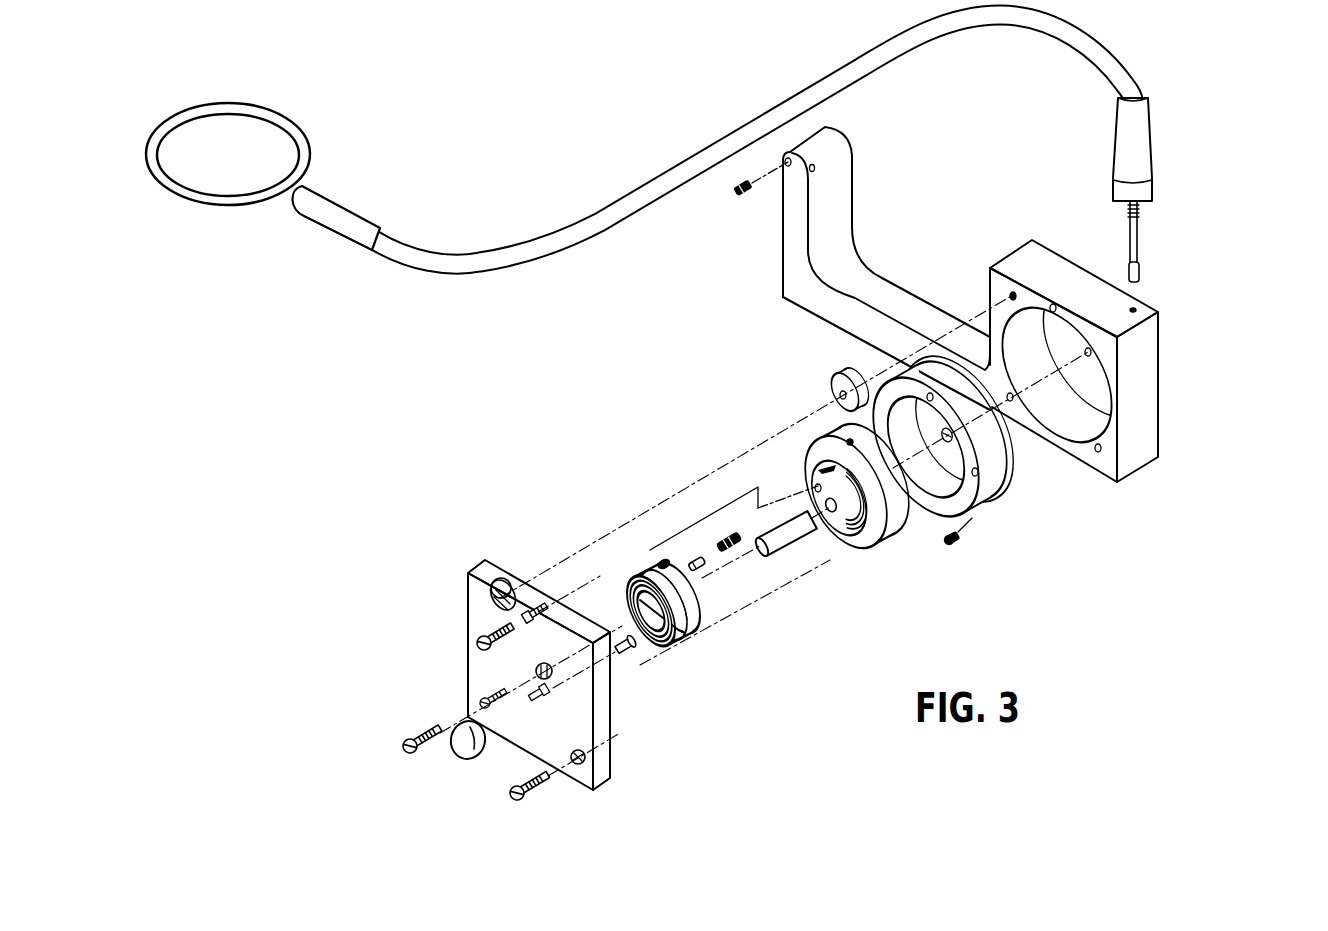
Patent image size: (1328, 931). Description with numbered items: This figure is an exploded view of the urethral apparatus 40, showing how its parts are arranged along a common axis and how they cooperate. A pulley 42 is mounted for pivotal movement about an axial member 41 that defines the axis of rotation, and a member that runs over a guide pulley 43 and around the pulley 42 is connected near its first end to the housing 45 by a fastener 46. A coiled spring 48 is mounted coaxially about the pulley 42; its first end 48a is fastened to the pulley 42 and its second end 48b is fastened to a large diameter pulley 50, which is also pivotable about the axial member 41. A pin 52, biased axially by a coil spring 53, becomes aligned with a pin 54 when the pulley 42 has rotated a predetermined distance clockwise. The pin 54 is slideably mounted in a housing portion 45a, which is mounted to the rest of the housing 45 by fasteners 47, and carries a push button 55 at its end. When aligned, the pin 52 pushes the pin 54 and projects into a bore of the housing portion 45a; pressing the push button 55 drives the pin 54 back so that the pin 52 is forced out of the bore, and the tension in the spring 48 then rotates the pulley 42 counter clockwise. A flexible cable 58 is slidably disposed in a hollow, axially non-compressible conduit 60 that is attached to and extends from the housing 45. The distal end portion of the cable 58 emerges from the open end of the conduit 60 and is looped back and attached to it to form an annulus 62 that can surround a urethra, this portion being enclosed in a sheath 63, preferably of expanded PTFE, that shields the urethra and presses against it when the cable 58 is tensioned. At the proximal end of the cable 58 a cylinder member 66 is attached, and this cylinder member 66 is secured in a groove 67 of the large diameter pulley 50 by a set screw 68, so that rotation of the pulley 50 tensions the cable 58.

The urethral apparatus 40 is at (730, 413).
The axial member 41 is at (807, 557).
The pulley 42 is at (870, 501).
The guide pulley 43 is at (830, 378).
The housing 45 is at (1109, 374).
The housing portion 45a is at (590, 678).
The fastener 46 is at (740, 213).
The fasteners 47 is at (450, 708).
The coiled spring 48 is at (701, 594).
The first end of coiled spring 48a is at (622, 544).
The second end of coiled spring 48b is at (746, 643).
The large diameter pulley 50 is at (977, 441).
The pin 52 is at (730, 517).
The coil spring 53 is at (712, 506).
The pin 54 is at (658, 668).
The push button 55 is at (449, 763).
The cable 58 is at (1172, 232).
The conduit 60 is at (781, 137).
The annulus 62 is at (228, 124).
The sheath 63 is at (332, 158).
The cylinder member 66 is at (1177, 273).
The groove 67 is at (987, 457).
The set screw 68 is at (985, 550).